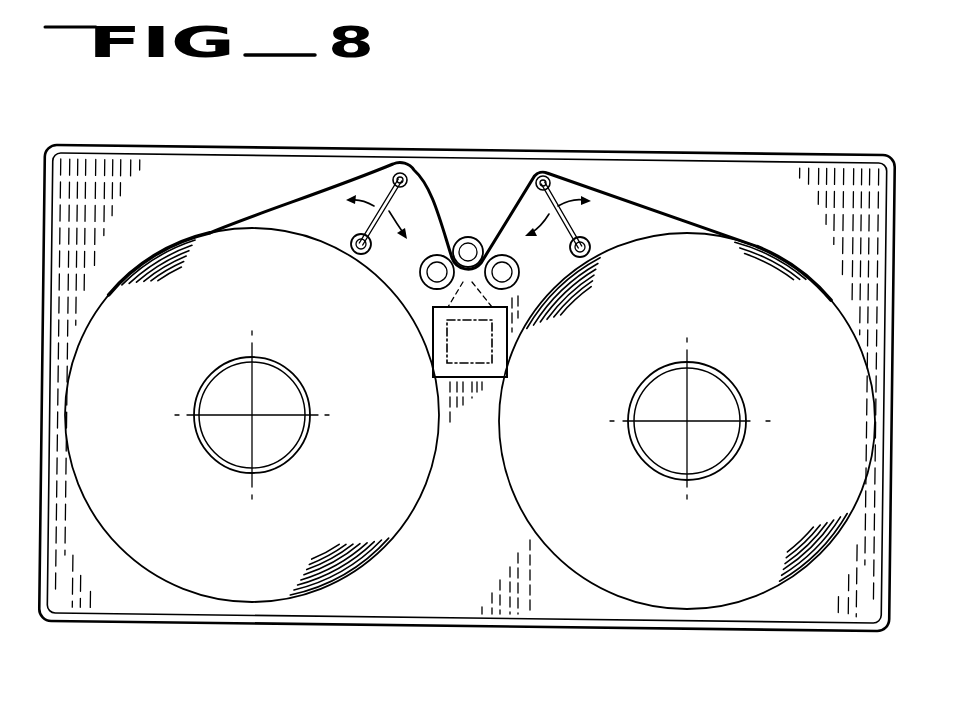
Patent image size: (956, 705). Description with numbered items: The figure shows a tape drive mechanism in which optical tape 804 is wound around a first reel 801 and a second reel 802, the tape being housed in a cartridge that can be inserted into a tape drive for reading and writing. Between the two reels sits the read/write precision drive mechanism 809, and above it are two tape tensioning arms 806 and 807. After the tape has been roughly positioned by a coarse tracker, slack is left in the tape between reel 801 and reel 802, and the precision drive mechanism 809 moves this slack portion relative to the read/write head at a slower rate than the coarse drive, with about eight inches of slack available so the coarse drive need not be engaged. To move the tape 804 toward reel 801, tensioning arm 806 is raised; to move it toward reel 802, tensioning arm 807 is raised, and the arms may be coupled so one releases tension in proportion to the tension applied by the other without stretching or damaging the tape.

The first reel 801 is at (715, 611).
The second reel 802 is at (233, 603).
The optical tape 804 is at (660, 209).
The tape tensioning arm 806 is at (595, 206).
The tape tensioning arm 807 is at (372, 220).
The read/write precision drive mechanism 809 is at (482, 210).